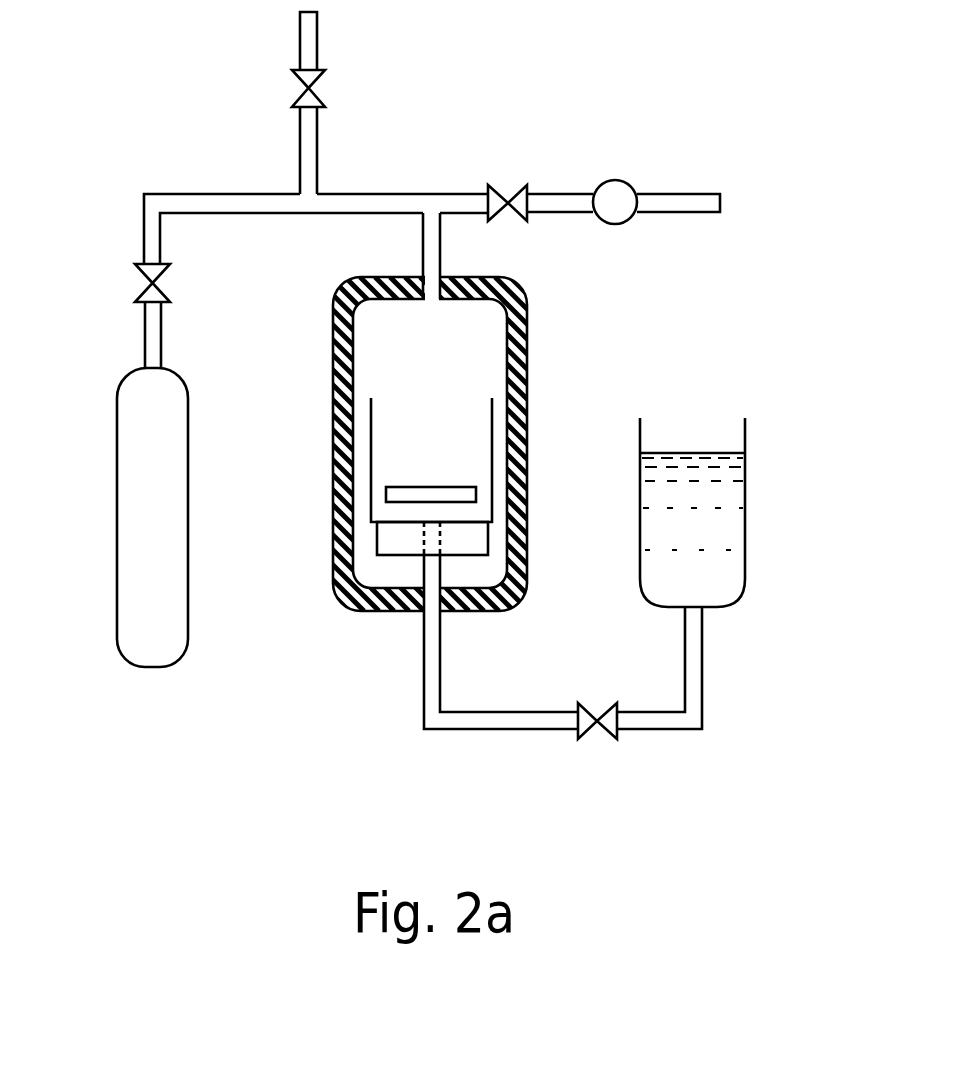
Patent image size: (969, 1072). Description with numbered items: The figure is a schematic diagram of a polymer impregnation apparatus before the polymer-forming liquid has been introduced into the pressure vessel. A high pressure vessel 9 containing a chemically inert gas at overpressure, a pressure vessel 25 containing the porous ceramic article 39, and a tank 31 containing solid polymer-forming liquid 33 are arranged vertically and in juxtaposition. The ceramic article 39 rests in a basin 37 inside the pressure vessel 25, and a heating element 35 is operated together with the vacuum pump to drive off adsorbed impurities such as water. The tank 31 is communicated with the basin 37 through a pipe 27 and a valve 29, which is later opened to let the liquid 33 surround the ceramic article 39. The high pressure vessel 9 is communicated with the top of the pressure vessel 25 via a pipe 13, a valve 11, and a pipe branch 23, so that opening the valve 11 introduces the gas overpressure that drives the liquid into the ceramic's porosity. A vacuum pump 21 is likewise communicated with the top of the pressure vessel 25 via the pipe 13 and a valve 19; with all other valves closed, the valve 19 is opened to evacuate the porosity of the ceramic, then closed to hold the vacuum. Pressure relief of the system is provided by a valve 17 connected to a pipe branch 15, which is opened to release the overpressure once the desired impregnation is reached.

The high pressure vessel 9 is at (117, 573).
The valve 11 is at (138, 292).
The pipe 13 is at (142, 228).
The pipe branch 15 is at (317, 160).
The valve 17 is at (297, 97).
The valve 19 is at (502, 197).
The vacuum pump 21 is at (627, 178).
The pipe branch 23 is at (423, 257).
The pressure vessel 25 is at (527, 358).
The pipe 27 is at (490, 730).
The valve 29 is at (589, 727).
The tank 31 is at (745, 492).
The solid polymer-forming liquid 33 is at (715, 585).
The heating element 35 is at (377, 543).
The basin 37 is at (371, 462).
The porous ceramic article 39 is at (445, 487).